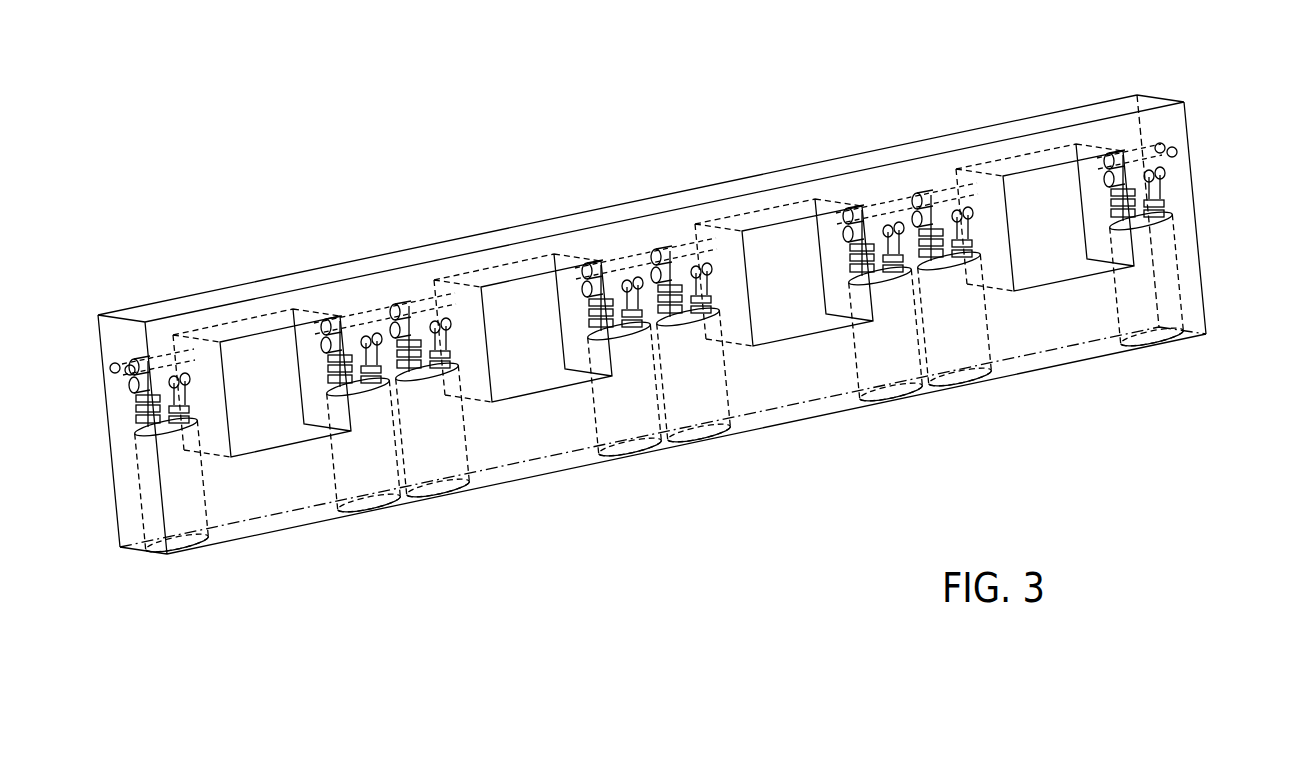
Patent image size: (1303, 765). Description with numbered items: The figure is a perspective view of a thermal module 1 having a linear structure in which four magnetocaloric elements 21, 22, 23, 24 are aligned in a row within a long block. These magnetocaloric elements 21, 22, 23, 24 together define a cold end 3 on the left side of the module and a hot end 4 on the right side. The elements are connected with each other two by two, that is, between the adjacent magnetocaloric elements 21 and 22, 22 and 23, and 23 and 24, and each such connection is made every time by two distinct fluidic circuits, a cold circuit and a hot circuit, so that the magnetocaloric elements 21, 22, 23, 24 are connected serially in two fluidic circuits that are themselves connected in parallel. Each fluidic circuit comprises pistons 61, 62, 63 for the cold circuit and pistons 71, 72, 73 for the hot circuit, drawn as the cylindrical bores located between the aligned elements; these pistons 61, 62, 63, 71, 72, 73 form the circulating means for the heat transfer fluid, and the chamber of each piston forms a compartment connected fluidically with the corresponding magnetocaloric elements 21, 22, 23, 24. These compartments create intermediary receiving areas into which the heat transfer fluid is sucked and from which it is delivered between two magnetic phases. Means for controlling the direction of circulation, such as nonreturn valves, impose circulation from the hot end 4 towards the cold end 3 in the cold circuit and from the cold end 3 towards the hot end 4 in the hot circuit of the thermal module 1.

The thermal module 1 is at (1224, 109).
The cold end 3 is at (195, 393).
The hot end 4 is at (1097, 217).
The magnetocaloric element 21 is at (252, 322).
The magnetocaloric element 22 is at (508, 268).
The magnetocaloric element 23 is at (762, 215).
The magnetocaloric element 24 is at (1027, 162).
The piston 61 is at (369, 477).
The piston 62 is at (626, 420).
The piston 63 is at (893, 380).
The piston 71 is at (438, 460).
The piston 72 is at (699, 403).
The piston 73 is at (966, 355).